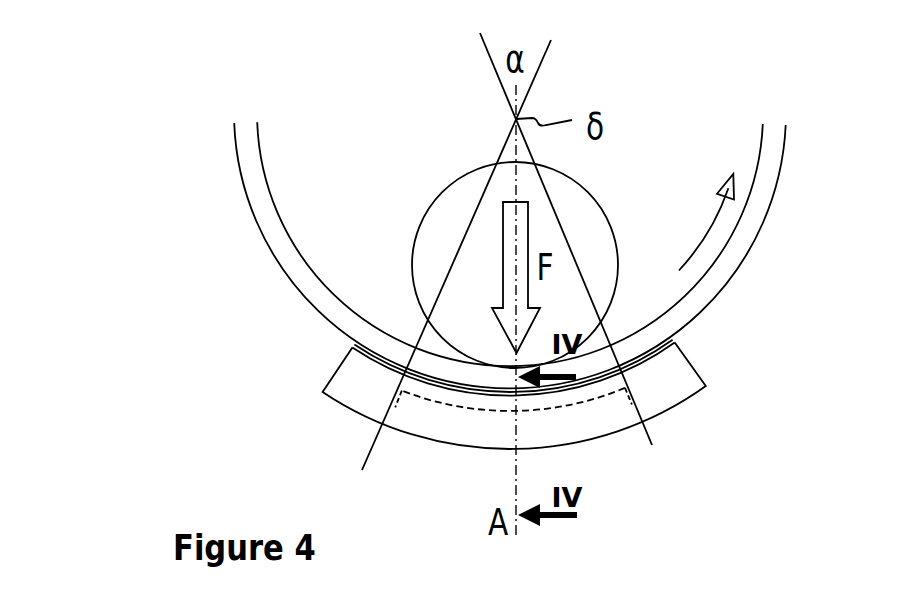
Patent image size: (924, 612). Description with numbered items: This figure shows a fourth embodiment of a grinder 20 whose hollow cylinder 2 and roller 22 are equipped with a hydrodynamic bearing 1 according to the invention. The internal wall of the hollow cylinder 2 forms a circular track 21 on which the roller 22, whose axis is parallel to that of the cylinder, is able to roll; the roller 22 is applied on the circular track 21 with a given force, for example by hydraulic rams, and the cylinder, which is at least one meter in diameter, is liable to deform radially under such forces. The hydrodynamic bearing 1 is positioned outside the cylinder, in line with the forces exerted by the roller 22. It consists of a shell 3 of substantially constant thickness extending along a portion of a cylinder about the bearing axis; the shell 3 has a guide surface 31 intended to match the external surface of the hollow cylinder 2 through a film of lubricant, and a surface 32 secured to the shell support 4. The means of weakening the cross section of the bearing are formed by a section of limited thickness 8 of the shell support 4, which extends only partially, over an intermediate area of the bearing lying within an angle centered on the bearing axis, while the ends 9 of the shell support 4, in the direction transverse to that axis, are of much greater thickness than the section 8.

The hydrodynamic bearing 1 is at (300, 353).
The hollow cylinder 2 is at (765, 168).
The shell 3 is at (675, 343).
The shell support 4 is at (660, 388).
The section of limited thickness 8 is at (565, 427).
The ends of the shell support 9 is at (364, 407).
The grinder 20 is at (165, 178).
The circular track 21 is at (292, 190).
The roller 22 is at (458, 215).
The guide surface 31 is at (373, 350).
The secured surface 32 is at (352, 350).